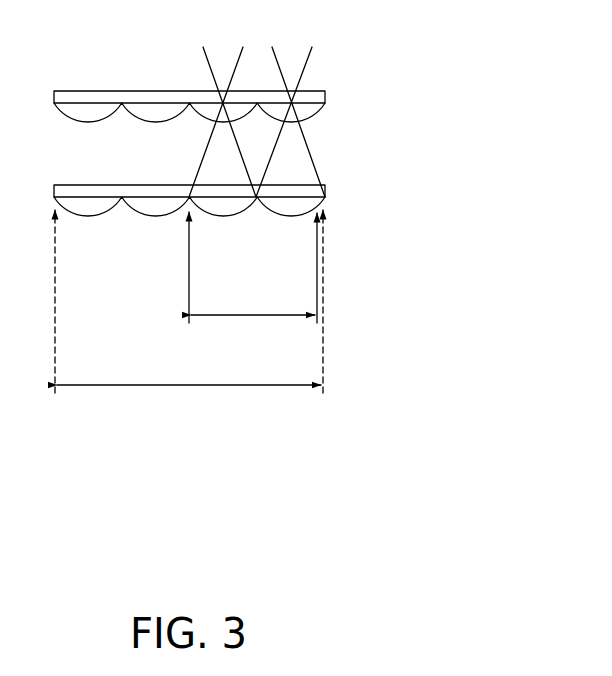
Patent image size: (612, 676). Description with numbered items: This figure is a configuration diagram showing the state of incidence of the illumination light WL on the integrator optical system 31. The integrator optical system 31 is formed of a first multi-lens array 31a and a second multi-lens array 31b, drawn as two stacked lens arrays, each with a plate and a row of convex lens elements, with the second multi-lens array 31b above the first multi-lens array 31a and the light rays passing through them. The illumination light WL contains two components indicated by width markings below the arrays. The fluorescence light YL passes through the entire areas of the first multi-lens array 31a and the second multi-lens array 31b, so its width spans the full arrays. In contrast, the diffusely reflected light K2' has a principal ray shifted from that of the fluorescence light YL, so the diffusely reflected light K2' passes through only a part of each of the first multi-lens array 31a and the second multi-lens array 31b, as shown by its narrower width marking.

The integrator optical system 31 is at (443, 100).
The first multi-lens array 31a is at (312, 203).
The second multi-lens array 31b is at (308, 113).
The fluorescence light YL is at (176, 387).
The diffusely reflected light K2' is at (253, 396).
The illumination light WL is at (277, 477).